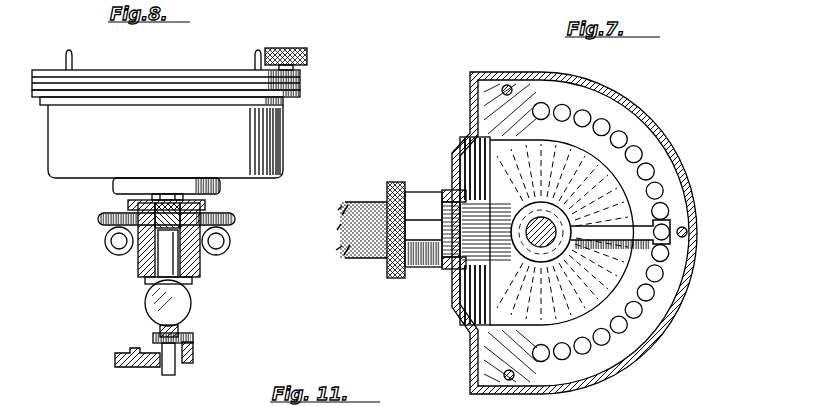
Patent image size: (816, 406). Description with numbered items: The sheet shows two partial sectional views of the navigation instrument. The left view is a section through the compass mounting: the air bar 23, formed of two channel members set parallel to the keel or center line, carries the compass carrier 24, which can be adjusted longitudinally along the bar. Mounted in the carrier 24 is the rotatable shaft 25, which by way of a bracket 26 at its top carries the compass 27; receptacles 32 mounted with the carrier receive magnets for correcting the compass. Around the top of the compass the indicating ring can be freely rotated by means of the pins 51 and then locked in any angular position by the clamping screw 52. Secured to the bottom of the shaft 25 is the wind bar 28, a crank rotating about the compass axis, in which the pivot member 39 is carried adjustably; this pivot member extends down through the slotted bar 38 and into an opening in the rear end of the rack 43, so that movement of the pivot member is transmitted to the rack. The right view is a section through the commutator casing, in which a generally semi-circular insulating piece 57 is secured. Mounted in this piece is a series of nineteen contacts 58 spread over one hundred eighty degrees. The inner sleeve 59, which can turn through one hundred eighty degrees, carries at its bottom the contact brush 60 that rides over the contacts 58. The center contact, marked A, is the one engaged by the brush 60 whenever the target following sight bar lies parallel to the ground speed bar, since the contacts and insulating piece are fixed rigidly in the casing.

In FIG. 8, the pins 51 is at (74, 59).
In FIG. 8, the clamping screw 52 is at (308, 52).
In FIG. 8, the compass 27 is at (284, 135).
In FIG. 8, the bracket 26 is at (206, 203).
In FIG. 8, the receptacles 32 is at (106, 247).
In FIG. 8, the compass carrier 24 is at (140, 262).
In FIG. 8, the rotatable shaft 25 is at (200, 256).
In FIG. 8, the air bar 23 is at (198, 268).
In FIG. 8, the wind bar 28 is at (192, 304).
In FIG. 8, the slotted bar 38 is at (152, 340).
In FIG. 8, the pivot member 39 is at (184, 356).
In FIG. 8, the rack 43 is at (125, 367).
In FIG. 7, the insulating piece 57 is at (660, 130).
In FIG. 7, the contacts 58 is at (668, 207).
In FIG. 7, the inner sleeve 59 is at (600, 158).
In FIG. 7, the contact brush 60 is at (672, 223).
In FIG. 7, the center contact A is at (687, 237).